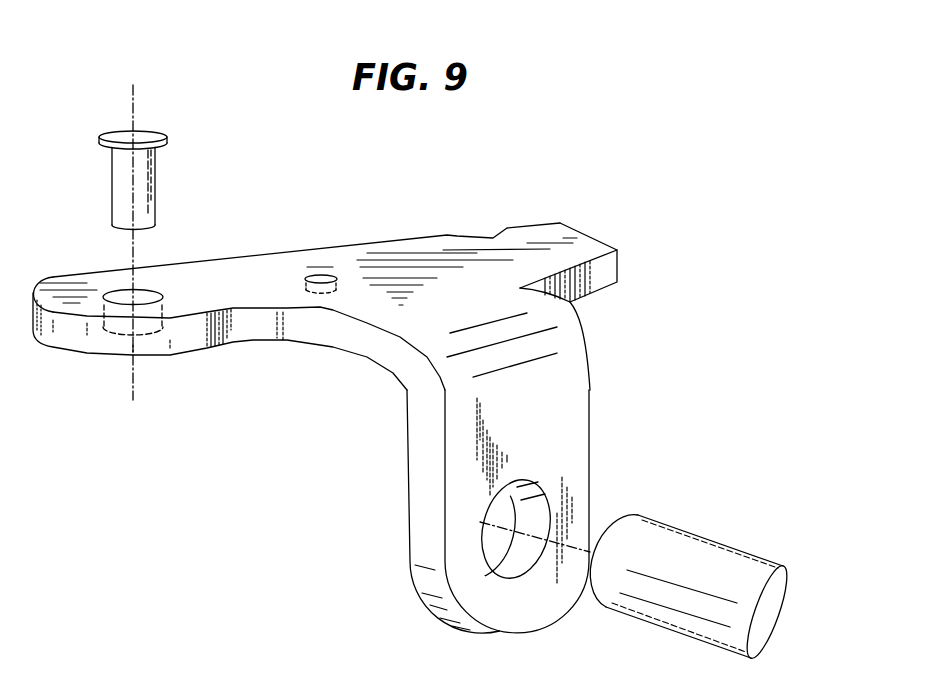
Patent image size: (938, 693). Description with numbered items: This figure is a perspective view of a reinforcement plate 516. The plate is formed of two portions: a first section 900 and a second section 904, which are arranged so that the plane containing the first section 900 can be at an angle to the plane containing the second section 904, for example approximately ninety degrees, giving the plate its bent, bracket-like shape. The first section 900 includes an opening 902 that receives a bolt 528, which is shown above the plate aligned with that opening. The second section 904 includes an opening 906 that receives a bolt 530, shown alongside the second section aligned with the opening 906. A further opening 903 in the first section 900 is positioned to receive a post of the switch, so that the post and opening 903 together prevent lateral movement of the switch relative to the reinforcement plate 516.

The first section 900 is at (350, 422).
The opening 902 is at (110, 290).
The opening 903 is at (322, 276).
The second section 904 is at (565, 420).
The opening 906 is at (517, 557).
The reinforcement plate 516 is at (592, 235).
The bolt 528 is at (152, 130).
The bolt 530 is at (718, 542).